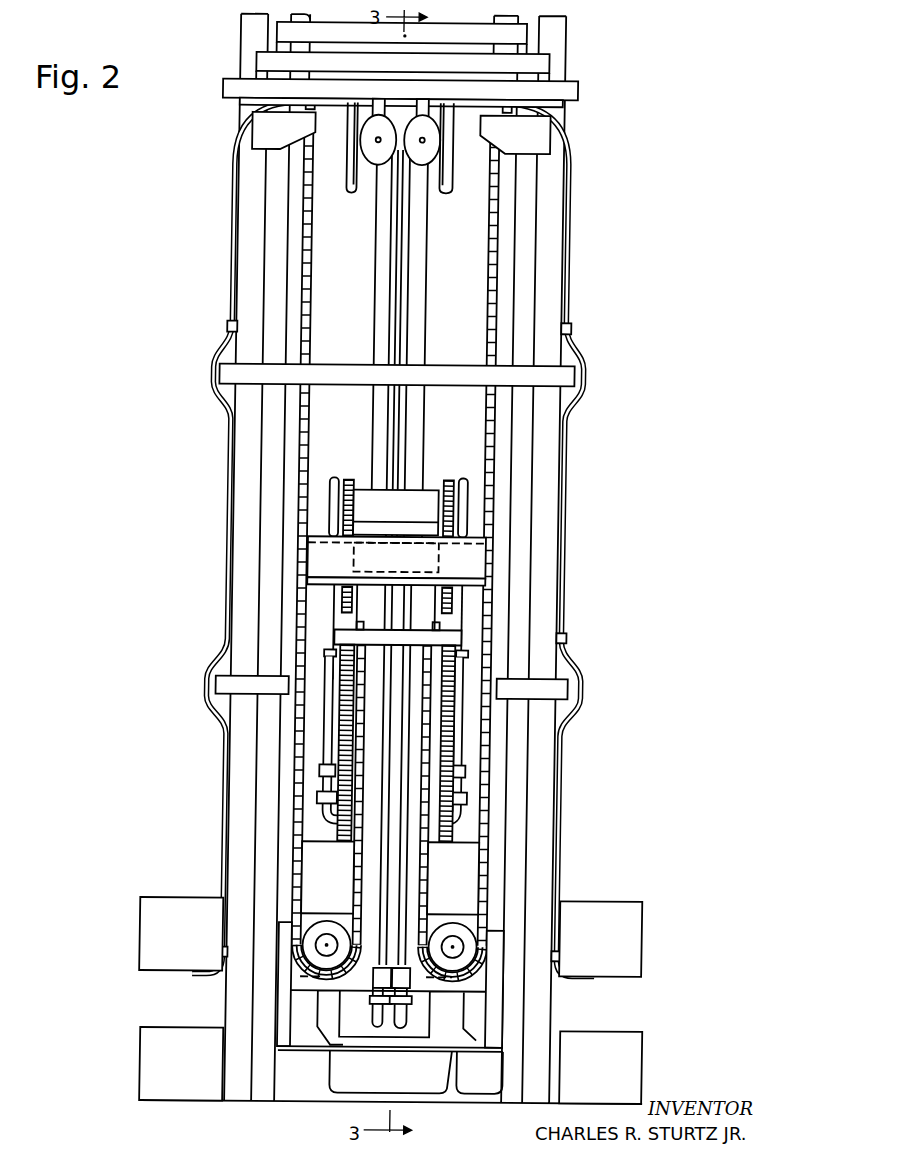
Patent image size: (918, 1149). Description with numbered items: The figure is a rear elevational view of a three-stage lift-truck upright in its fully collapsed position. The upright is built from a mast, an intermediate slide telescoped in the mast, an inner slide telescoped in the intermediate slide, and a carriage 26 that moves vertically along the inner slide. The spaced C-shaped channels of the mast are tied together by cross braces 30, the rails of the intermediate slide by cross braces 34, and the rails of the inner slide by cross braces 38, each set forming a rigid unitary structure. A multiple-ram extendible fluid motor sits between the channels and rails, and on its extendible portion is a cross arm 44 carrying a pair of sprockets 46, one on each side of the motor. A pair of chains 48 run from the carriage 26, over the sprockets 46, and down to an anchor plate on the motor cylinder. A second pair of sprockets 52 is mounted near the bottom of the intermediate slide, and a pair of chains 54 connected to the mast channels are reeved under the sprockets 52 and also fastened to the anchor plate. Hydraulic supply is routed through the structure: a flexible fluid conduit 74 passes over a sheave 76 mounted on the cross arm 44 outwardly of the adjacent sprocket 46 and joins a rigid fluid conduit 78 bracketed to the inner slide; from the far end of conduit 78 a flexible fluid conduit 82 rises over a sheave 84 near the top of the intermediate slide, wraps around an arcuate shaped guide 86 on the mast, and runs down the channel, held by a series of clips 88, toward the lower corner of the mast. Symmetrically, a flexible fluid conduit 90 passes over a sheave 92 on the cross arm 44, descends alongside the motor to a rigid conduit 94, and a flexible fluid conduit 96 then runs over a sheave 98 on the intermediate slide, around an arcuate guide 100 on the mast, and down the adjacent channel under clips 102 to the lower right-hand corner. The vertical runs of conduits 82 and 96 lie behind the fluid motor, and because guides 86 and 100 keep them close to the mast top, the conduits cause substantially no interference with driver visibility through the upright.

The carriage 26 is at (146, 927).
The cross braces 30 is at (570, 92).
The cross braces 34 is at (542, 70).
The cross braces 38 is at (511, 36).
The cross arm 44 is at (363, 490).
The sprockets 46 is at (345, 480).
The chains 48 is at (350, 598).
The sprockets 52 is at (327, 930).
The chains 54 is at (298, 746).
The flexible fluid conduit 74 is at (335, 622).
The sheave 76 is at (330, 500).
The rigid fluid conduit 78 is at (368, 1015).
The flexible fluid conduit 82 is at (350, 148).
The sheave 84 is at (373, 165).
The arcuate shaped guide 86 is at (342, 185).
The clips 88 is at (226, 128).
The flexible fluid conduit 90 is at (462, 608).
The sheave 92 is at (461, 478).
The rigid conduit 94 is at (456, 833).
The flexible fluid conduit 96 is at (404, 295).
The sheave 98 is at (422, 165).
The arcuate guide 100 is at (447, 180).
The clips 102 is at (565, 133).